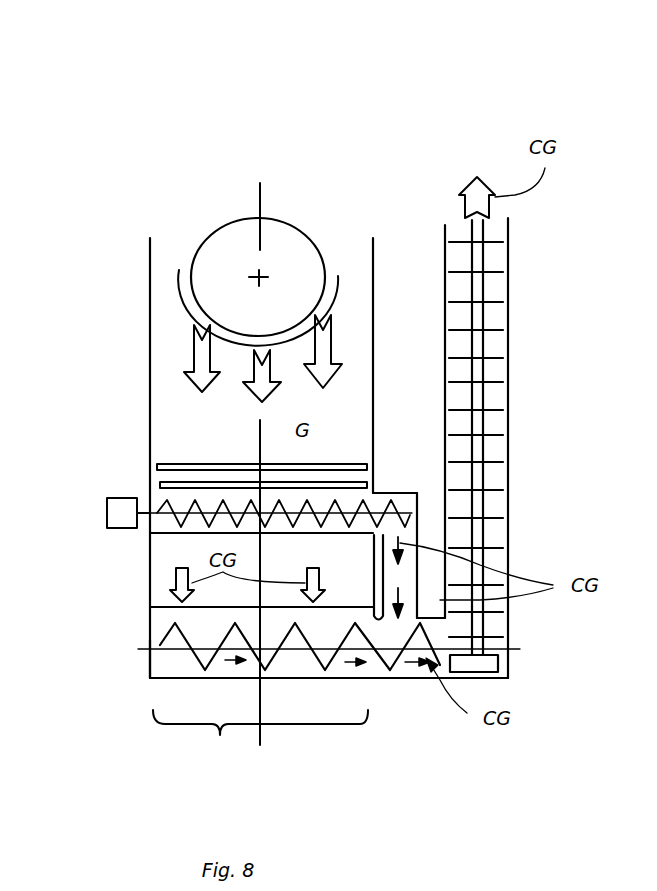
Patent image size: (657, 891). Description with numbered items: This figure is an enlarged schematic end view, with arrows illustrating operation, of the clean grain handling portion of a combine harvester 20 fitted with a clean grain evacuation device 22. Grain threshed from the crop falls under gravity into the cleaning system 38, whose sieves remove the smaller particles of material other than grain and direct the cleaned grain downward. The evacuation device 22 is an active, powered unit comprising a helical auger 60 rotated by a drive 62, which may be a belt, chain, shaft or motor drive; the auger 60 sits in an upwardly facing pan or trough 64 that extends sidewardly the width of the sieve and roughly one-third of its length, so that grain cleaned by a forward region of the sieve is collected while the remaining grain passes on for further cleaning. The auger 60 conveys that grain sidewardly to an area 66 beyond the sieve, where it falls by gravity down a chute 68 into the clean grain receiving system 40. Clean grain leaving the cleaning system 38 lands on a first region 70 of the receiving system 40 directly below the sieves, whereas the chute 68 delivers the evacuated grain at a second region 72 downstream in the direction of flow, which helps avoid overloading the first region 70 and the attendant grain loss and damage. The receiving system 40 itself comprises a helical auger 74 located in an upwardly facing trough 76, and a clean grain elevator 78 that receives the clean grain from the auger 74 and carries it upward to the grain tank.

The combine harvester 20 is at (503, 68).
The clean grain evacuation device 22 is at (97, 517).
The cleaning system 38 is at (340, 452).
The clean grain receiving system 40 is at (142, 696).
The helical auger 60 is at (200, 500).
The drive 62 is at (122, 498).
The trough 64 is at (167, 537).
The area 66 is at (402, 490).
The chute 68 is at (417, 533).
The first region 70 is at (260, 736).
The second region 72 is at (395, 632).
The helical auger 74 is at (168, 641).
The trough 76 is at (150, 670).
The clean grain elevator 78 is at (508, 370).